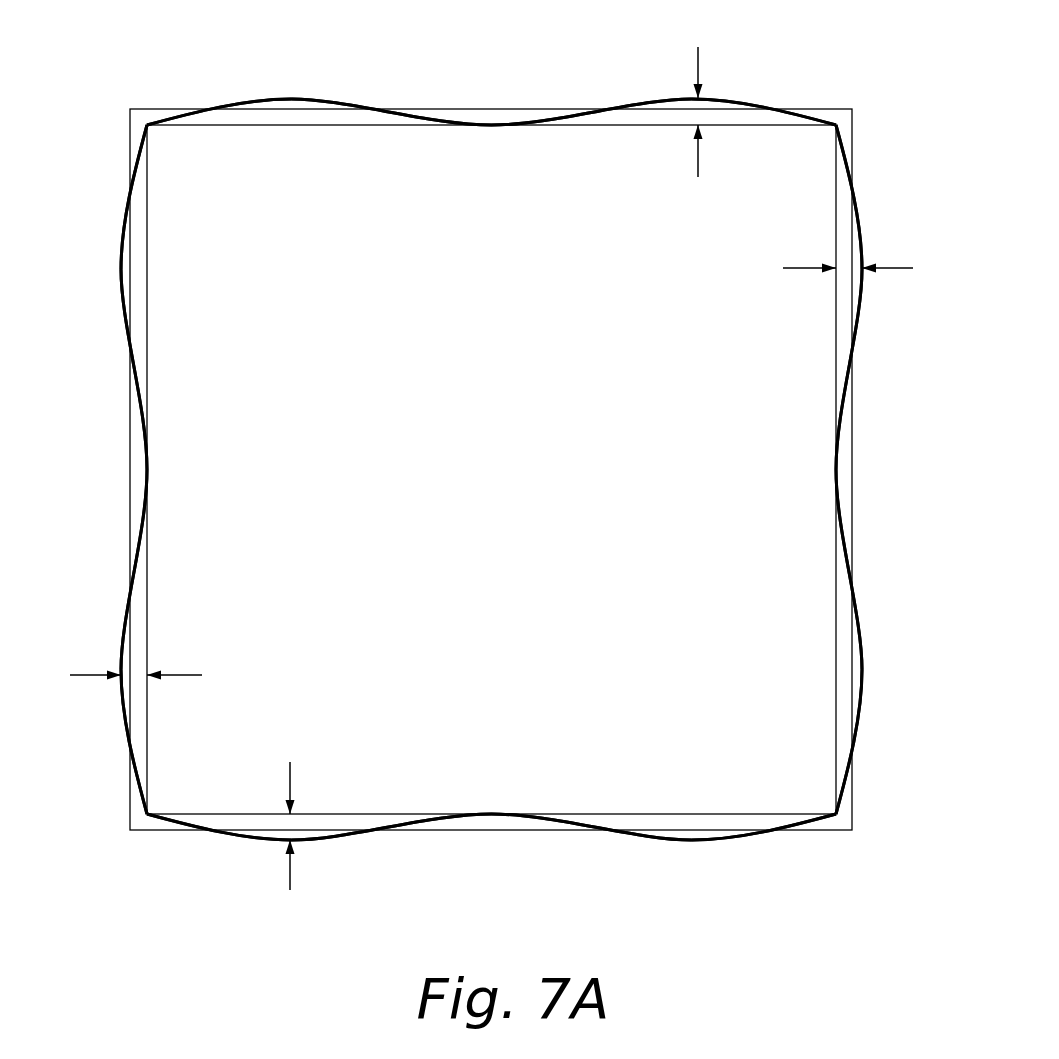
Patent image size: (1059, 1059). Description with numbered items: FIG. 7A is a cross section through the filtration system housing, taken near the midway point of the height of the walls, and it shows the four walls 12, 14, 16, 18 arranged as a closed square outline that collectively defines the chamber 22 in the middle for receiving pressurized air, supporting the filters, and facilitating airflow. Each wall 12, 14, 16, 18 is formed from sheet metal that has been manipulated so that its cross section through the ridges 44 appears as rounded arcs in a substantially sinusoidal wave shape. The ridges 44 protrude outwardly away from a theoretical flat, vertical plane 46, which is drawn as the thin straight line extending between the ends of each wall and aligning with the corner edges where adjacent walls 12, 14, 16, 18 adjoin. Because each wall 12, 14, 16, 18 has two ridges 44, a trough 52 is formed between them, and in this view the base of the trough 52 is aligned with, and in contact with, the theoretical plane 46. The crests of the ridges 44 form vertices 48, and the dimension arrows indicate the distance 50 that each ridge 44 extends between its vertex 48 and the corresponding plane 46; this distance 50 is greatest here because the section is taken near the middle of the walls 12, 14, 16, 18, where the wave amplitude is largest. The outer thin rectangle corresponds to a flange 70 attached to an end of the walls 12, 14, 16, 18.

The wall 12 is at (120, 358).
The wall 14 is at (371, 98).
The wall 16 is at (855, 355).
The wall 18 is at (774, 839).
The chamber 22 is at (483, 453).
The ridge 44 is at (222, 100).
The theoretical flat vertical plane 46 is at (300, 127).
The vertex 48 is at (291, 98).
The distance 50 is at (697, 113).
The trough 52 is at (440, 124).
The flange 70 is at (493, 113).